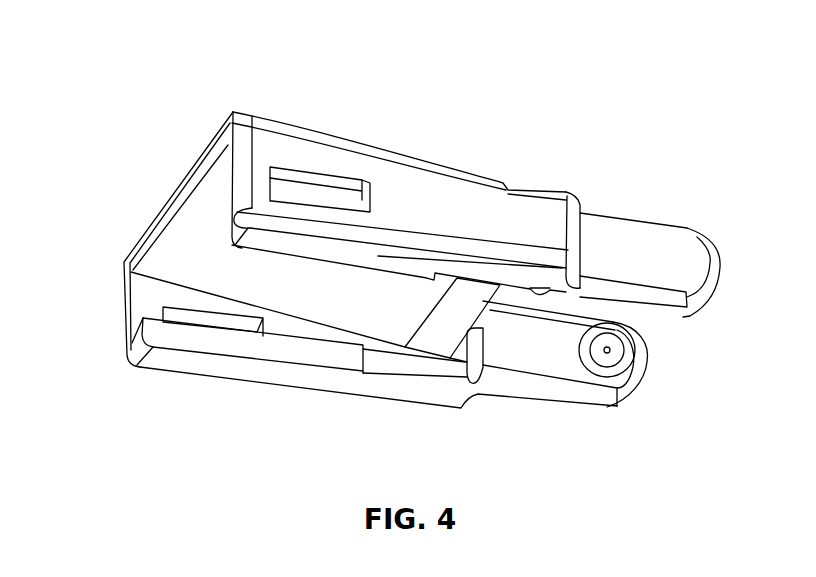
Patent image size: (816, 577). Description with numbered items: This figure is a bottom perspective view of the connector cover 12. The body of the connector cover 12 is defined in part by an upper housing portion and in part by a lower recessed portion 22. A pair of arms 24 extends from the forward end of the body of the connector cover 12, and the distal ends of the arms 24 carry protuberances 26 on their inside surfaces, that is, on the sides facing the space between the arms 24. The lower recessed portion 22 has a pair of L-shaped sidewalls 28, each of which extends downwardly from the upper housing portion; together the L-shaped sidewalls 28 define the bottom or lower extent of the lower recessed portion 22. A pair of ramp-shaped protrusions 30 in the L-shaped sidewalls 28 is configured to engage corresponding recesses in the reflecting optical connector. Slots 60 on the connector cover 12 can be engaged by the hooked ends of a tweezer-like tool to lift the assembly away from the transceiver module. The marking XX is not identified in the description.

The connector cover 12 is at (408, 245).
The lower recessed portion 22 is at (192, 213).
The arms 24 is at (698, 258).
The protuberances 26 is at (612, 346).
The L-shaped sidewalls 28 is at (260, 148).
The ramp-shaped protrusions 30 is at (428, 282).
The slots 60 is at (350, 196).
The unlabeled feature XX is at (127, 300).